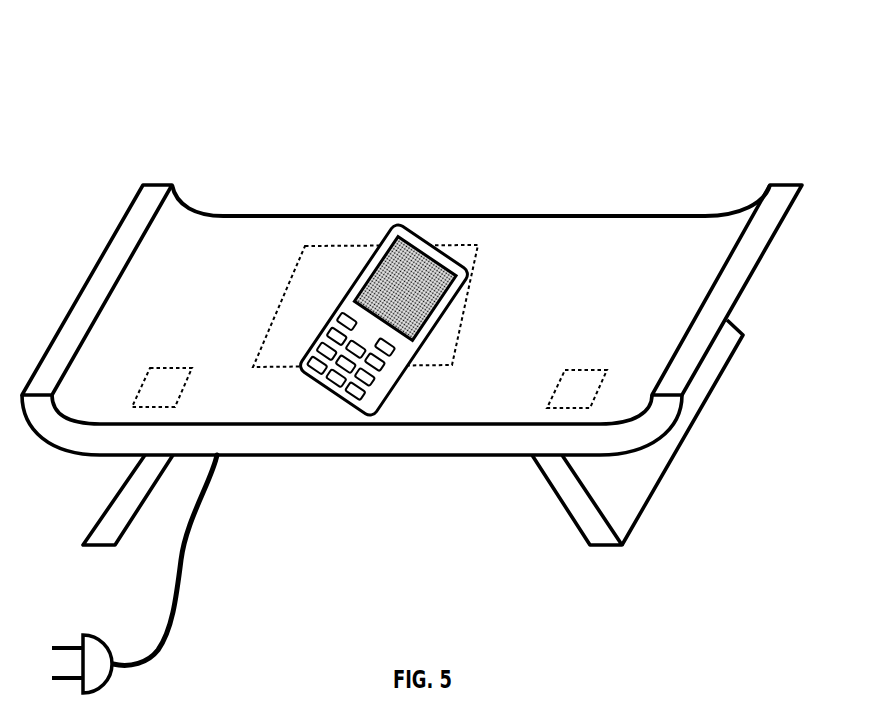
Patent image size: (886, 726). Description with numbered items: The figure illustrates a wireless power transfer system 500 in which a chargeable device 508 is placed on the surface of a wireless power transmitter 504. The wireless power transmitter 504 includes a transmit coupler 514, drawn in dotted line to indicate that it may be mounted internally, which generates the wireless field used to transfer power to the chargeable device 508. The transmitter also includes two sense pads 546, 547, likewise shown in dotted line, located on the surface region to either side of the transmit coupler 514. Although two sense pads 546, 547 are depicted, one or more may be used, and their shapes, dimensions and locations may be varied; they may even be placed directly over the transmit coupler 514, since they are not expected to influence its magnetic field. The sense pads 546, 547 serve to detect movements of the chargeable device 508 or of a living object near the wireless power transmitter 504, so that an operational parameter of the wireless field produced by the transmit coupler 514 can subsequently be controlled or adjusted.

The wireless power transfer system 500 is at (412, 353).
The wireless power transmitter 504 is at (412, 462).
The chargeable device 508 is at (385, 222).
The transmit coupler 514 is at (297, 270).
The sense pad 546 is at (173, 367).
The sense pad 547 is at (592, 369).